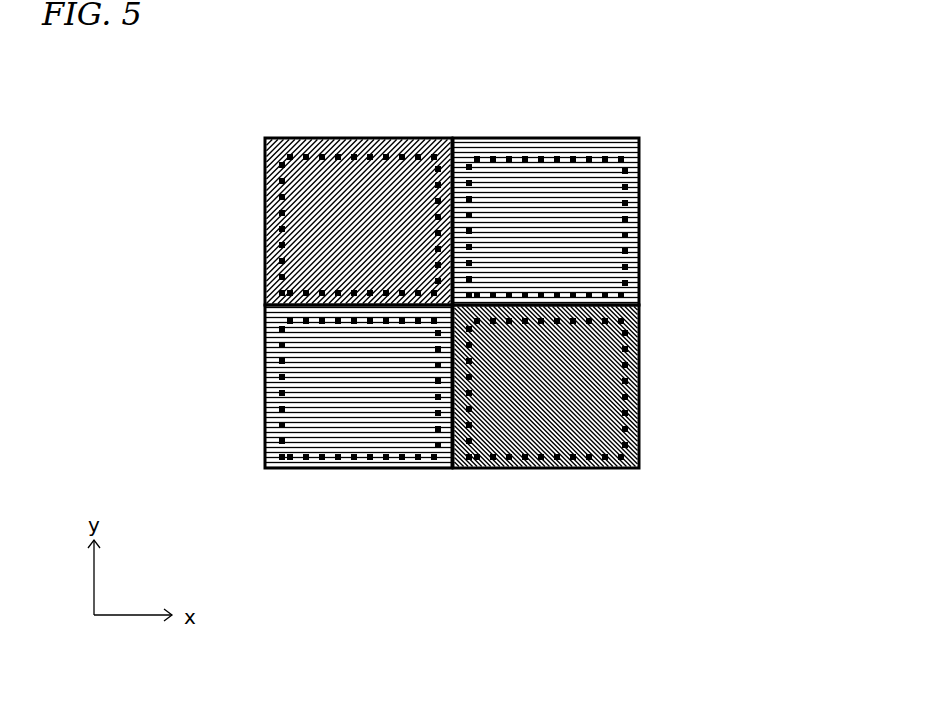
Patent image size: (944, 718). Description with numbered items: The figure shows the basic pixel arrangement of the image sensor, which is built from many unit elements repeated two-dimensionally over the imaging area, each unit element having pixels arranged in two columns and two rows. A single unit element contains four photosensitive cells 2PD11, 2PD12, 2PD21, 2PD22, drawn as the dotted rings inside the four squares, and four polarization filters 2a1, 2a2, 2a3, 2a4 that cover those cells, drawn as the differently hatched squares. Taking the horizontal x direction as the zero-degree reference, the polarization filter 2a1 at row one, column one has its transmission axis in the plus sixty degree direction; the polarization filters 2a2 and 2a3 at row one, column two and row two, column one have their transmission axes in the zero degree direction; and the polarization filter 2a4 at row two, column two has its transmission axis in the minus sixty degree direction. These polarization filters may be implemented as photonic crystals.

The polarization filter 2a1 is at (265, 205).
The polarization filter 2a2 is at (640, 207).
The polarization filter 2a3 is at (267, 400).
The polarization filter 2a4 is at (638, 398).
The photosensitive cell 2PD11 is at (373, 158).
The photosensitive cell 2PD12 is at (523, 157).
The photosensitive cell 2PD21 is at (372, 452).
The photosensitive cell 2PD22 is at (530, 460).